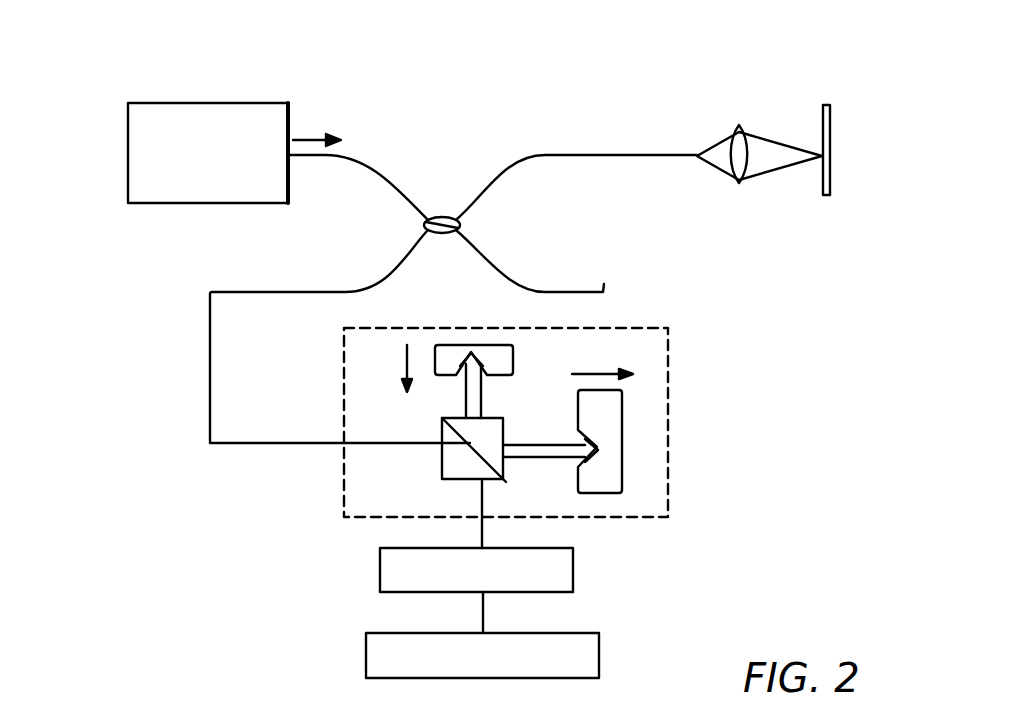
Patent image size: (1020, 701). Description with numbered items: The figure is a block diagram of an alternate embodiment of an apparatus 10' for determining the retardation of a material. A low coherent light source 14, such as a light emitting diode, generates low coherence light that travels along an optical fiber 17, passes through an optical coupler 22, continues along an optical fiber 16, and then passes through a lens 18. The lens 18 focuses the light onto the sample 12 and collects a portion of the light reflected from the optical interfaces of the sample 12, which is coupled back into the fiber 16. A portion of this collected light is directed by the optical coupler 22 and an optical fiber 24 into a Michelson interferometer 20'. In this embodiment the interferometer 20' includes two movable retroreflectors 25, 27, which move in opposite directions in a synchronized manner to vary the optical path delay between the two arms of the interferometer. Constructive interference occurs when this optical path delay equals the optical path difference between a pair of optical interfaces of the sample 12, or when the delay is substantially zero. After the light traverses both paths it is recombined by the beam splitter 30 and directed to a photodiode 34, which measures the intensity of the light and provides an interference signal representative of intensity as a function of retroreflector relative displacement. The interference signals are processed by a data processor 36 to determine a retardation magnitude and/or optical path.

The apparatus 10' is at (156, 47).
The sample 12 is at (836, 116).
The low coherent light source 14 is at (289, 180).
The optical fiber 16 is at (628, 150).
The optical fiber 17 is at (377, 173).
The lens 18 is at (740, 128).
The Michelson interferometer 20' is at (450, 422).
The optical coupler 22 is at (441, 216).
The optical fiber 24 is at (210, 372).
The movable retroreflector 25 is at (452, 345).
The movable retroreflector 27 is at (622, 451).
The beam splitter 30 is at (445, 428).
The photodiode 34 is at (575, 572).
The data processor 36 is at (600, 658).